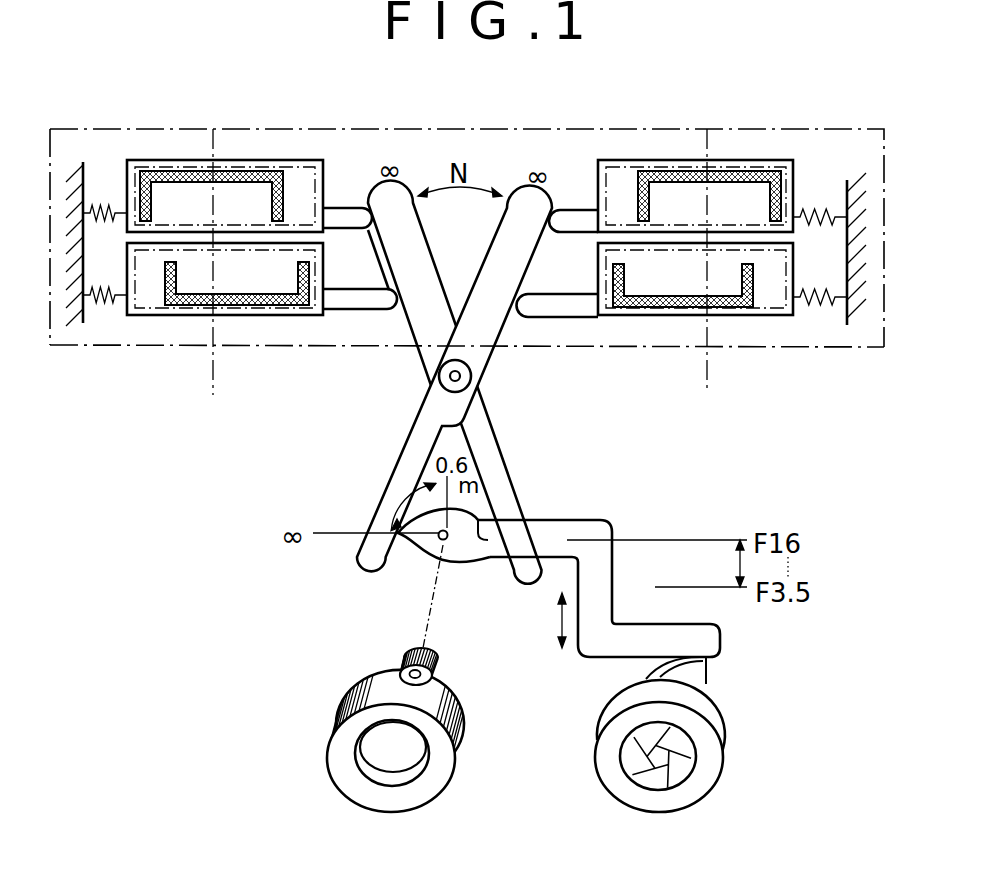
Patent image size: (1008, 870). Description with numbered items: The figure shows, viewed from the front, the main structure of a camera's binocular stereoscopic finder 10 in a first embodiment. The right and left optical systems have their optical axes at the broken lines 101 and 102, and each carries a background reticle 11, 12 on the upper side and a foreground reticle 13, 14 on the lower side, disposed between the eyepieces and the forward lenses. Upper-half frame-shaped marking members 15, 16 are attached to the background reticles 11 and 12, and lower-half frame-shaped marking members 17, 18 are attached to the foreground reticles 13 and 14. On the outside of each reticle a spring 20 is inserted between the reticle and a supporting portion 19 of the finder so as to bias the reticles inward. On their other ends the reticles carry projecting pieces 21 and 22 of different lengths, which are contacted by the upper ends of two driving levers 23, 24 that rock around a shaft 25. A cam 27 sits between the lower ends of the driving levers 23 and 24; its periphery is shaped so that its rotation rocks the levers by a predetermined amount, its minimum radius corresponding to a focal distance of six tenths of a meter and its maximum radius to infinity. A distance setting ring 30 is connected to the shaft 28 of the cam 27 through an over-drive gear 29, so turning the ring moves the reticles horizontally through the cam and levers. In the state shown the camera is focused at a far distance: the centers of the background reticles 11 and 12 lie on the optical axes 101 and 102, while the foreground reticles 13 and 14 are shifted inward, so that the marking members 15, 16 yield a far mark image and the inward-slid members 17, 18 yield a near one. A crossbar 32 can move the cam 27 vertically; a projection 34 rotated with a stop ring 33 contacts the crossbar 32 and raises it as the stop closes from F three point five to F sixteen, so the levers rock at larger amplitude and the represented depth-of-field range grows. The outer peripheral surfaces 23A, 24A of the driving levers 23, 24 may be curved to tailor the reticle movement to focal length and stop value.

The binocular stereoscopic finder 10 is at (822, 129).
The background reticle 11 is at (310, 160).
The background reticle 12 is at (752, 160).
The foreground reticle 13 is at (303, 315).
The foreground reticle 14 is at (600, 325).
The frame-shaped marking member 15 is at (240, 171).
The frame-shaped marking member 16 is at (632, 171).
The frame-shaped marking member 17 is at (235, 305).
The frame-shaped marking member 18 is at (658, 307).
The fixed wall 19 is at (72, 323).
The spring 20 is at (100, 205).
The projecting piece 21 is at (340, 208).
The projecting piece 22 is at (350, 289).
The driving lever 23 is at (418, 337).
The outer peripheral surface 23A is at (395, 308).
The driving lever 24 is at (500, 323).
The outer peripheral surface 24A is at (553, 318).
The shaft 25 is at (471, 378).
The cam 27 is at (462, 552).
The shaft 28 is at (428, 558).
The gear 29 is at (402, 660).
The distance setting ring 30 is at (342, 713).
The crossbar 32 is at (722, 635).
The stop ring 33 is at (725, 730).
The projection 34 is at (707, 672).
The optical axis 101 is at (213, 390).
The optical axis 102 is at (707, 378).